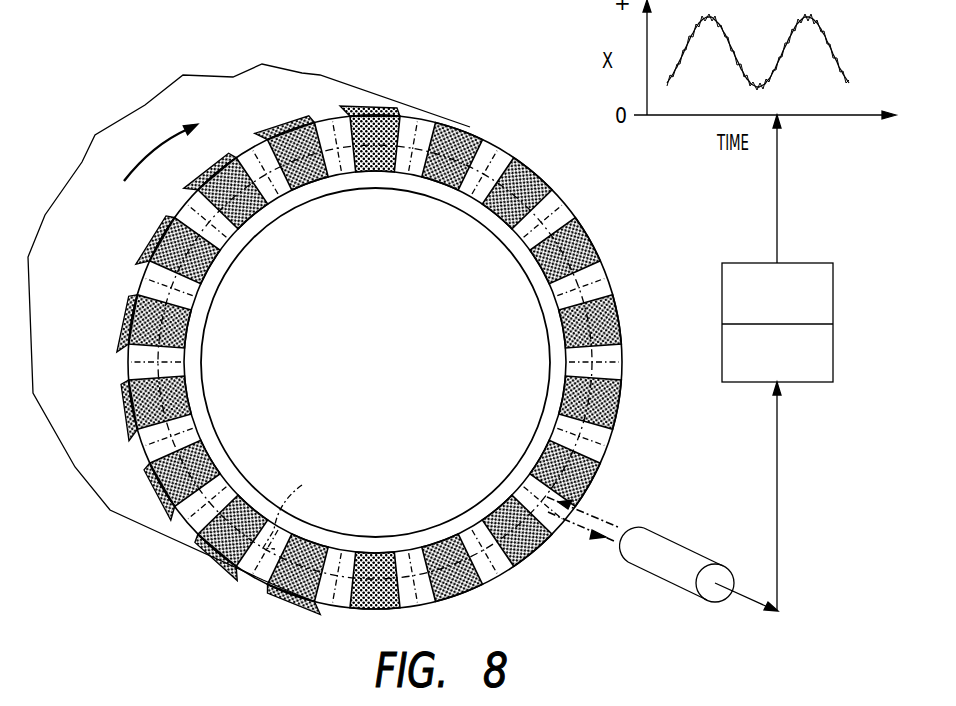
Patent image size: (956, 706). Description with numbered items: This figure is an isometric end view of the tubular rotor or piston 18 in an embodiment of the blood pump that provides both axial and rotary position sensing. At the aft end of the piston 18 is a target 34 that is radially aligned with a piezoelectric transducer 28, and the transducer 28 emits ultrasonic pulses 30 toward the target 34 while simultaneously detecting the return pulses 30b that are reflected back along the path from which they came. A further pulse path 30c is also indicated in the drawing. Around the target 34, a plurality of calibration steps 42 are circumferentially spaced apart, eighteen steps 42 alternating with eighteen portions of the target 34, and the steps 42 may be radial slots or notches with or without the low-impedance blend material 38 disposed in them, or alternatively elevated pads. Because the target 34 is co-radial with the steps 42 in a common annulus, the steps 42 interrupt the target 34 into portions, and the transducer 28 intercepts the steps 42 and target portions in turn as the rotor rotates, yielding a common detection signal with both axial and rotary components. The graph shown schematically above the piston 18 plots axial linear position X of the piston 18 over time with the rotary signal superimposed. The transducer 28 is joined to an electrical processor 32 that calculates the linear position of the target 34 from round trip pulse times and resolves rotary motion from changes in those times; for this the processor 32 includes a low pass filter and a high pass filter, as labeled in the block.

The piston 18 is at (252, 78).
The transducer 28 is at (673, 558).
The ultrasonic pulses 30 is at (607, 524).
The return pulses 30b is at (580, 530).
The flux path 30c is at (308, 485).
The electrical processor 32 is at (813, 252).
The target 34 is at (167, 360).
The blend material 38 is at (307, 167).
The steps 42 is at (140, 258).